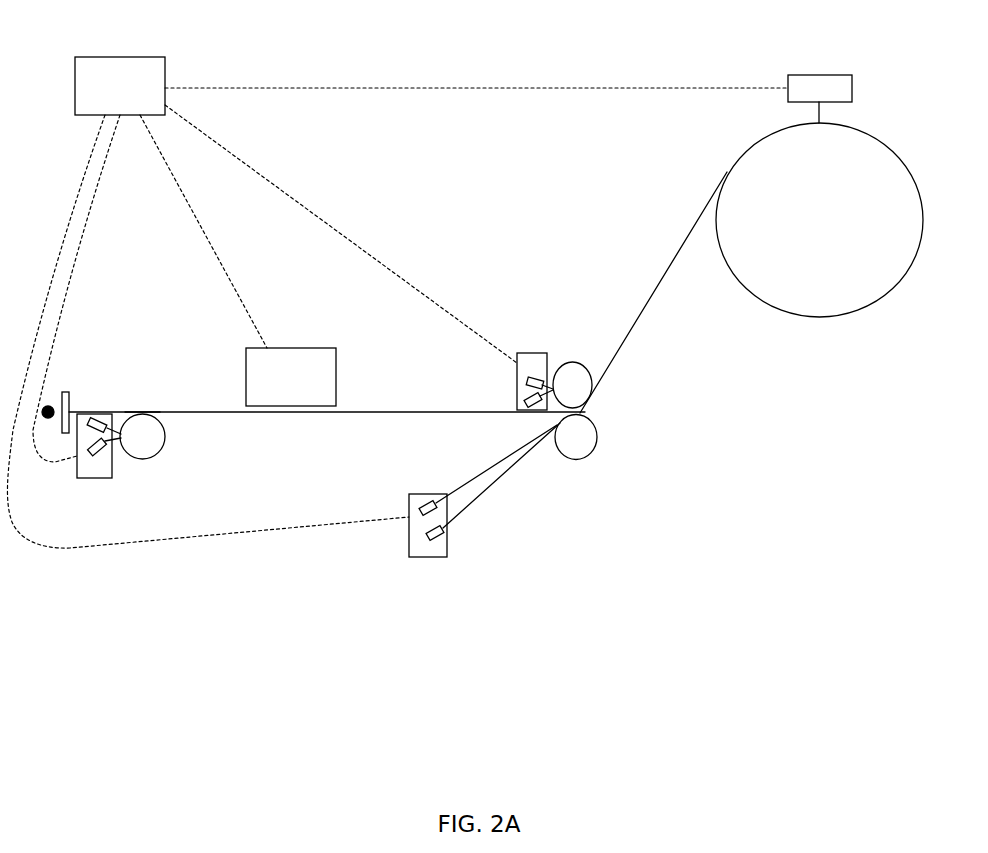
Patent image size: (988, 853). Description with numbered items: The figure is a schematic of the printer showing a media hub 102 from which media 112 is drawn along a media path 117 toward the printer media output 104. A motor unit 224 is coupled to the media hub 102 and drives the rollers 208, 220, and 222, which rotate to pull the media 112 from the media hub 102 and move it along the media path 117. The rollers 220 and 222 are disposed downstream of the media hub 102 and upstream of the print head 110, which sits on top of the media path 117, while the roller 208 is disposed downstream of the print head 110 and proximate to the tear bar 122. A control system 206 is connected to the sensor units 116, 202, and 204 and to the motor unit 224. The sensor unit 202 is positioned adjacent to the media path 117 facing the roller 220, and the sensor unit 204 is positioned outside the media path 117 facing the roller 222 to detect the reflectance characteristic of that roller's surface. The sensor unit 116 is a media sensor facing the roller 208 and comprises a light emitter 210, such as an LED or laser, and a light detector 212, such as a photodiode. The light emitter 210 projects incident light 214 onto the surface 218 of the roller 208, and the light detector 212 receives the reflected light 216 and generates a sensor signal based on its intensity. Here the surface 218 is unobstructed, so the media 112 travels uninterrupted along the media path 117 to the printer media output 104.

The media hub 102 is at (878, 142).
The printer media output 104 is at (49, 410).
The print head 110 is at (337, 367).
The media 112 is at (628, 340).
The sensor unit 116 is at (89, 481).
The media path 117 is at (420, 410).
The tear bar 122 is at (70, 395).
The sensor unit 202 is at (547, 350).
The sensor unit 204 is at (447, 547).
The control system 206 is at (166, 57).
The roller 208 is at (165, 443).
The light emitter 210 is at (102, 422).
The light detector 212 is at (92, 450).
The incident light 214 is at (119, 422).
The reflected light 216 is at (109, 438).
The surface of the roller 218 is at (137, 414).
The roller 220 is at (578, 363).
The roller 222 is at (590, 425).
The motor unit 224 is at (832, 73).